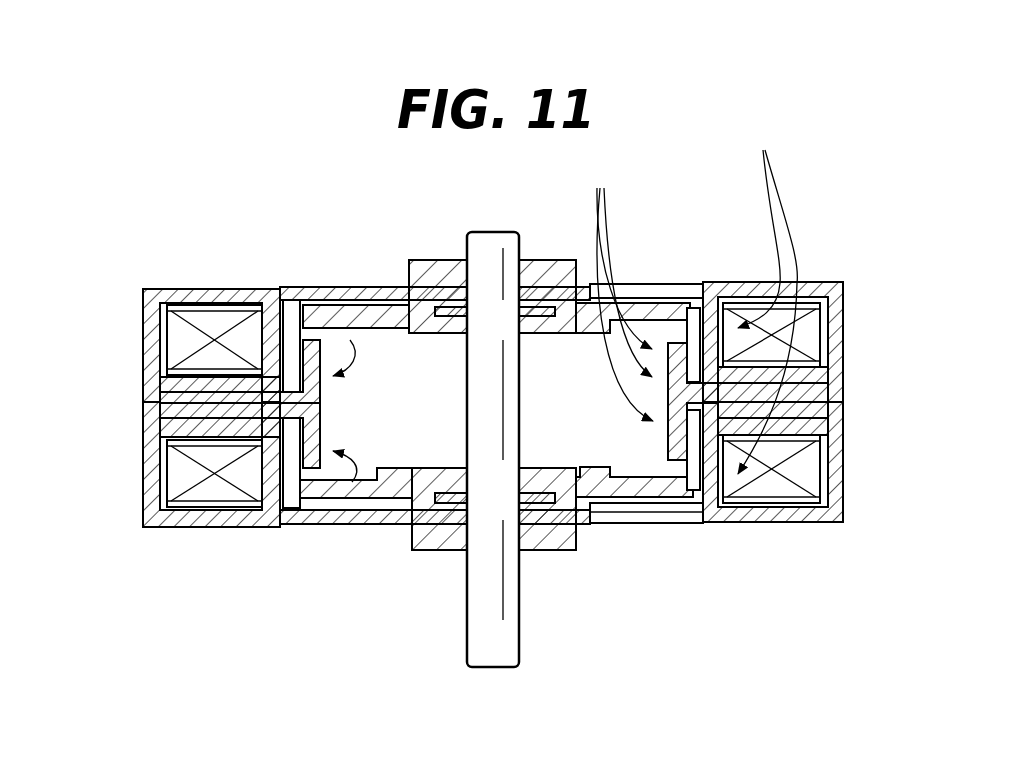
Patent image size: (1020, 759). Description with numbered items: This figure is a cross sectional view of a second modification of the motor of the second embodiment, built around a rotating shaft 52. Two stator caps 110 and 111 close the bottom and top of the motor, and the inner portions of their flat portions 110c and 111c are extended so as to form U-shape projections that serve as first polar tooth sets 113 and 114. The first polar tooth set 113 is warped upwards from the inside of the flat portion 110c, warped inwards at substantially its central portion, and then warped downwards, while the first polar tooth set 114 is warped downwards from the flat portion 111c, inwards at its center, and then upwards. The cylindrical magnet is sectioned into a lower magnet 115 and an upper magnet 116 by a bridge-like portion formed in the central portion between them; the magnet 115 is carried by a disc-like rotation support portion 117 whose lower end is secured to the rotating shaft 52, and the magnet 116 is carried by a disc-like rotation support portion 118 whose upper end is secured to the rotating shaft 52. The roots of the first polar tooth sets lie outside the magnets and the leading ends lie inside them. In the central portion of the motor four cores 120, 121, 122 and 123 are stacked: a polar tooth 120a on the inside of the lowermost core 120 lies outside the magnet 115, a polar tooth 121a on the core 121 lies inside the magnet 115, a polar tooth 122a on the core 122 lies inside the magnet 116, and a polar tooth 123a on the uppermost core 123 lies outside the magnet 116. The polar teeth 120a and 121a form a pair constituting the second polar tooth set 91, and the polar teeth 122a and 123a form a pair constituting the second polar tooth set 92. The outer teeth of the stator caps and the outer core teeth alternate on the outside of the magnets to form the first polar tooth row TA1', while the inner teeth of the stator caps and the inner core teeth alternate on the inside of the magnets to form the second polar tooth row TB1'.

The rotating shaft 52 is at (490, 232).
The second polar tooth set 91 is at (330, 508).
The second polar tooth set 92 is at (299, 302).
The stator cap 110 is at (812, 522).
The flat portion 110c is at (770, 522).
The stator cap 111 is at (812, 282).
The flat portion 111c is at (736, 282).
The first polar tooth set 113 is at (660, 441).
The first polar tooth set 114 is at (653, 303).
The magnet 115 is at (695, 522).
The magnet 116 is at (698, 284).
The disc-like rotation support portion 117 is at (371, 506).
The disc-like rotation support portion 118 is at (368, 296).
The core 120 is at (155, 445).
The polar tooth 120a is at (278, 527).
The core 121 is at (165, 425).
The polar tooth 121a is at (322, 427).
The core 122 is at (165, 400).
The polar tooth 122a is at (322, 391).
The core 123 is at (158, 383).
The polar tooth 123a is at (272, 292).
The second polar tooth row TB1' is at (548, 291).
The first polar tooth row TA1' is at (762, 296).